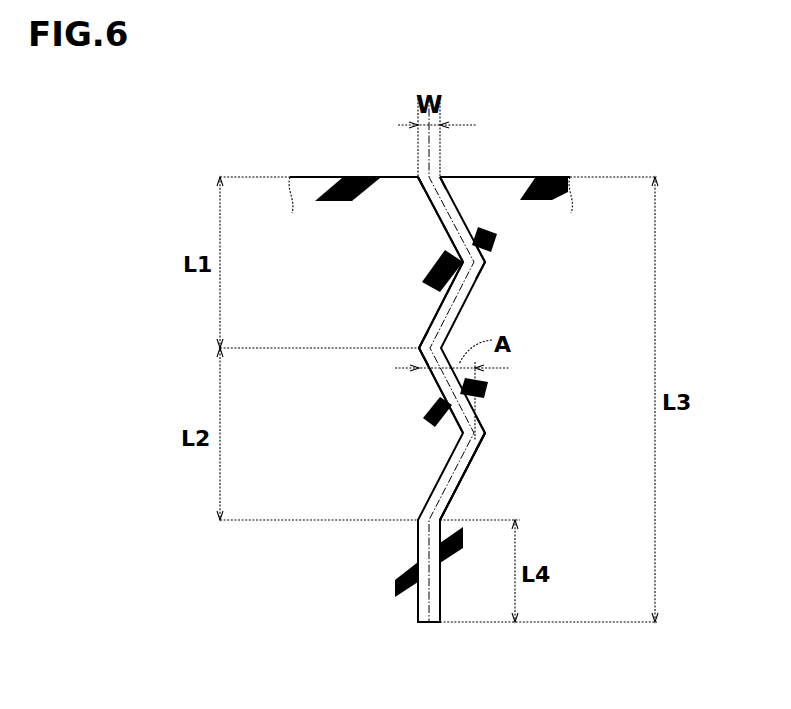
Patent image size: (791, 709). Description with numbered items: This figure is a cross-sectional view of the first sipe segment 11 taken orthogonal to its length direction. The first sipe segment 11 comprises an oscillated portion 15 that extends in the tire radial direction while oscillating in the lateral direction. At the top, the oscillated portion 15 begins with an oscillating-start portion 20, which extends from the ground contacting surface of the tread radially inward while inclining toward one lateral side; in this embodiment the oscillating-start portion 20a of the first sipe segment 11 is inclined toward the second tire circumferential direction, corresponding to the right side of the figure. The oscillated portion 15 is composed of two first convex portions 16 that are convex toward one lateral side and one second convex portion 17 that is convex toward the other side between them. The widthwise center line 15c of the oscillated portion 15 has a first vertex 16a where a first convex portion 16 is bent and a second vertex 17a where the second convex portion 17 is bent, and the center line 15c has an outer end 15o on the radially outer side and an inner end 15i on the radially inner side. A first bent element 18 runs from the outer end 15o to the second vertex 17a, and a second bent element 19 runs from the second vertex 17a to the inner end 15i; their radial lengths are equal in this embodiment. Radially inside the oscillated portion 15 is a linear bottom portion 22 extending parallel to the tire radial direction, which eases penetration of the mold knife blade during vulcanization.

The first sipe segment 11 is at (354, 170).
The oscillated portion 15 is at (466, 281).
The outer end 15o is at (437, 176).
The inner end 15i is at (418, 533).
The widthwise center line 15c is at (443, 493).
The first convex portion 16 is at (488, 222).
The first vertex 16a is at (486, 263).
The second convex portion 17 is at (436, 388).
The second vertex 17a is at (419, 348).
The first bent element 18 is at (460, 296).
The second bent element 19 is at (477, 450).
The oscillating-start portion 20 is at (436, 213).
The oscillating-start portion of the first sipe segment 20a is at (448, 238).
The linear bottom portion 22 is at (418, 602).